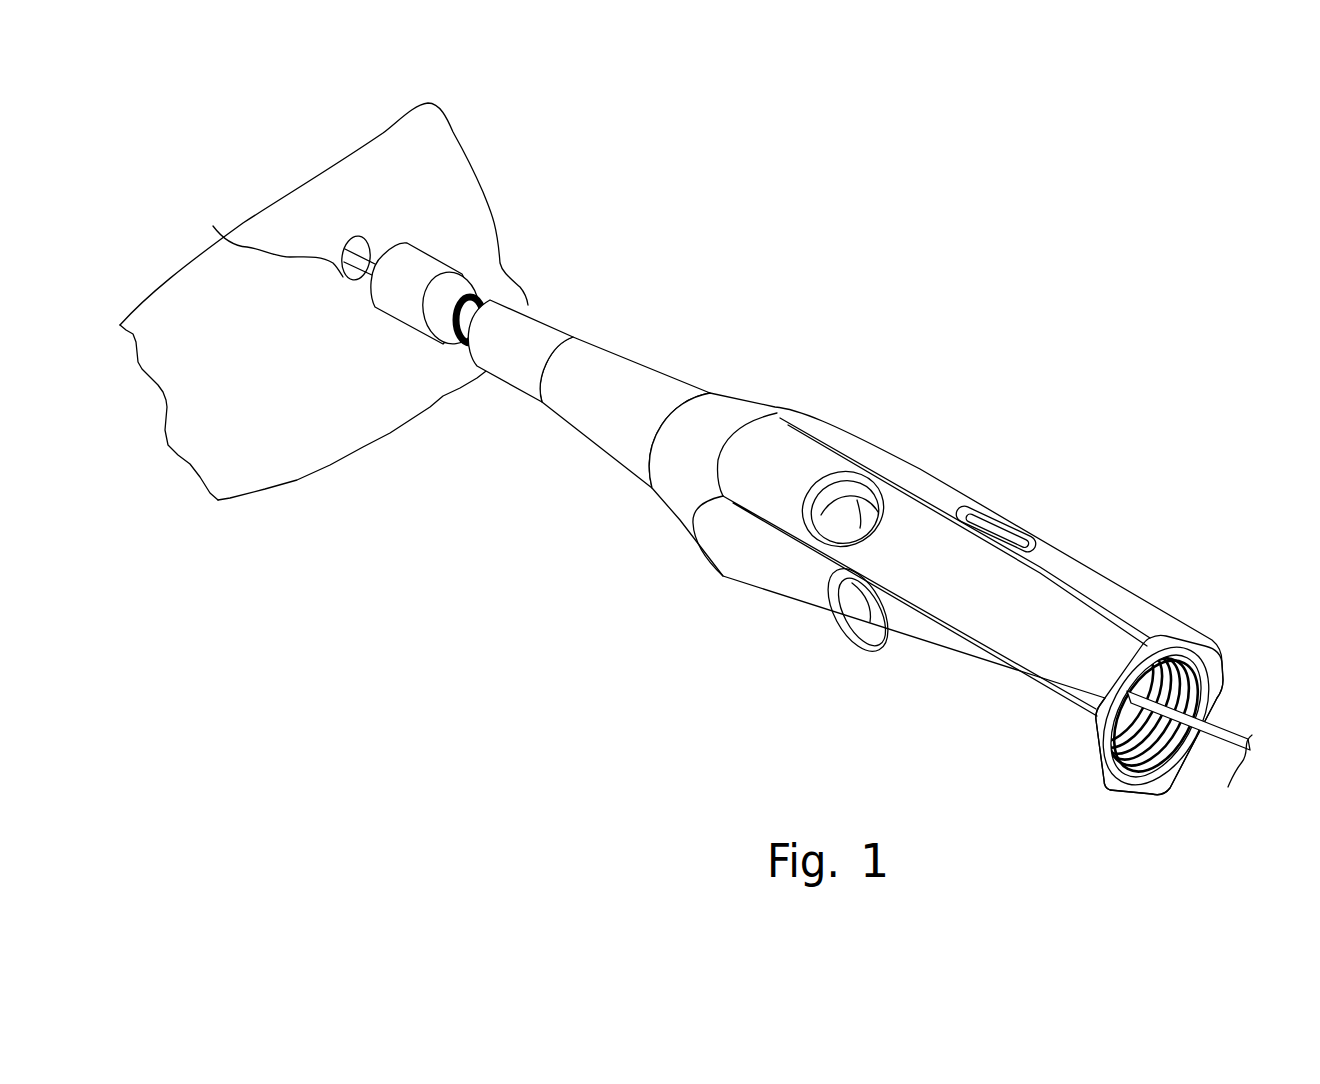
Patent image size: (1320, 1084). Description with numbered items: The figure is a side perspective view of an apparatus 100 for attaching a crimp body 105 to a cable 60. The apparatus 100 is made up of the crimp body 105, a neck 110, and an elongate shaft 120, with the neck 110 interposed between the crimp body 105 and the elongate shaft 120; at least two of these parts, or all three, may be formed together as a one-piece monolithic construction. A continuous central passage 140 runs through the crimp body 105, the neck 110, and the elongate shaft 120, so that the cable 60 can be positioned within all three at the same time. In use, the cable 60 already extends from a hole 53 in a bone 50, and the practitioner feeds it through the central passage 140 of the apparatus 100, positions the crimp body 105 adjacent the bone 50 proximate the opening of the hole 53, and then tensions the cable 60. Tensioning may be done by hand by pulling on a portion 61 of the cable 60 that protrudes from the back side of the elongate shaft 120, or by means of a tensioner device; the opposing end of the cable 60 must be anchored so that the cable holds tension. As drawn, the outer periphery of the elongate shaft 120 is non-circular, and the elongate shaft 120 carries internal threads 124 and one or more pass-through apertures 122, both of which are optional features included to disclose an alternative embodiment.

The bone 50 is at (467, 200).
The hole 53 is at (266, 240).
The cable 60 is at (382, 243).
The portion of the cable 61 is at (1227, 738).
The apparatus 100 is at (820, 543).
The crimp body 105 is at (404, 338).
The neck 110 is at (502, 285).
The elongate shaft 120 is at (711, 312).
The pass-through apertures 122 is at (870, 620).
The internal threads 124 is at (1180, 687).
The central passage 140 is at (1133, 747).